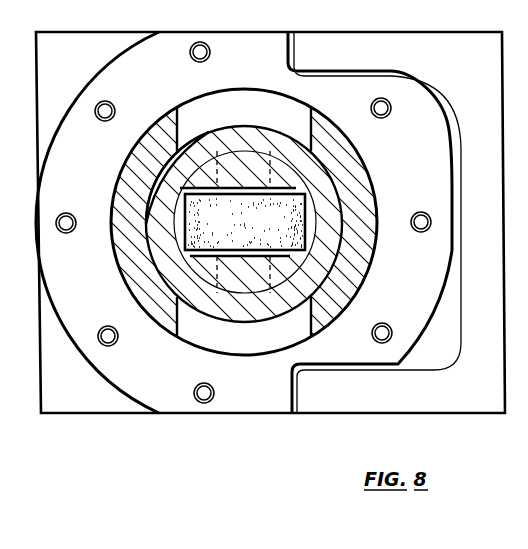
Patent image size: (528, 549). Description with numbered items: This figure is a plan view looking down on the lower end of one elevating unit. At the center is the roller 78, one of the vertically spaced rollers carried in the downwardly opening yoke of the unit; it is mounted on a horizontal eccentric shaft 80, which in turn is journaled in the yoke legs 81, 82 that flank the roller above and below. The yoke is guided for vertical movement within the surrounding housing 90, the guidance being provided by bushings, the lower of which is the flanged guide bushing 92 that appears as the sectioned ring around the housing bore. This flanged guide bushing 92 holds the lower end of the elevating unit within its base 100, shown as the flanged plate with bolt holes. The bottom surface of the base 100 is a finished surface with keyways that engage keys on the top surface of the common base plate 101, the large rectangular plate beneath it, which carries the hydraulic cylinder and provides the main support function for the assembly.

The roller 78 is at (242, 232).
The eccentric shaft 80 is at (158, 193).
The yoke leg 81 is at (203, 176).
The yoke leg 82 is at (207, 270).
The housing 90 is at (157, 312).
The flanged guide bushing 92 is at (190, 290).
The base 100 is at (248, 398).
The base plate 101 is at (78, 393).